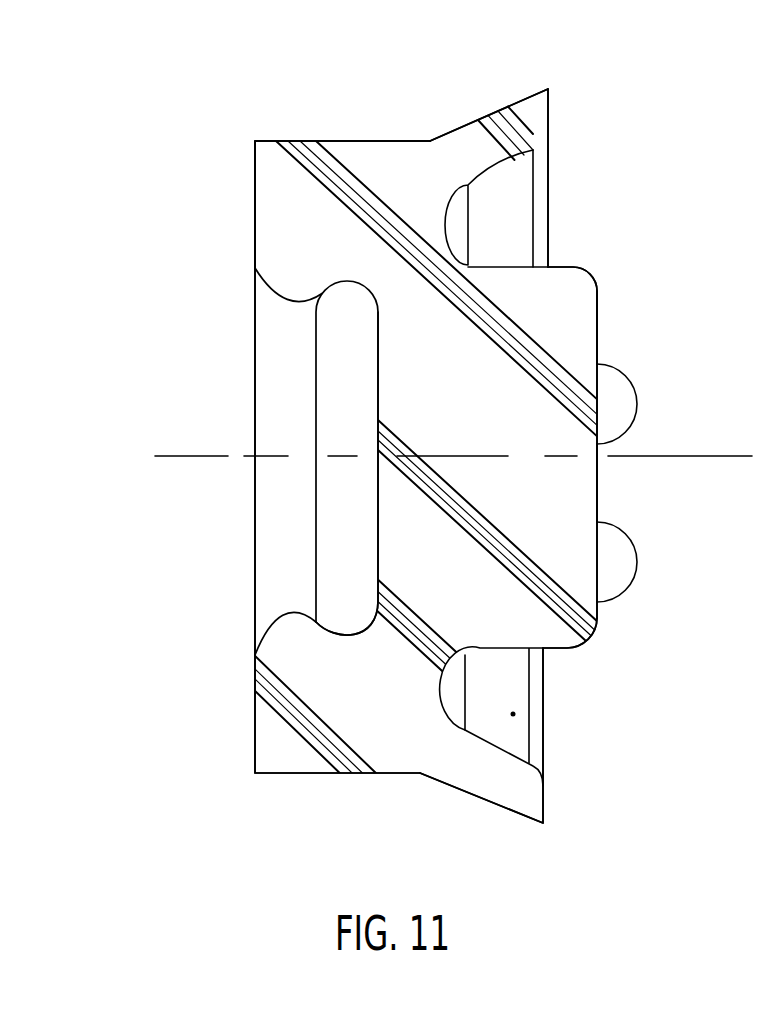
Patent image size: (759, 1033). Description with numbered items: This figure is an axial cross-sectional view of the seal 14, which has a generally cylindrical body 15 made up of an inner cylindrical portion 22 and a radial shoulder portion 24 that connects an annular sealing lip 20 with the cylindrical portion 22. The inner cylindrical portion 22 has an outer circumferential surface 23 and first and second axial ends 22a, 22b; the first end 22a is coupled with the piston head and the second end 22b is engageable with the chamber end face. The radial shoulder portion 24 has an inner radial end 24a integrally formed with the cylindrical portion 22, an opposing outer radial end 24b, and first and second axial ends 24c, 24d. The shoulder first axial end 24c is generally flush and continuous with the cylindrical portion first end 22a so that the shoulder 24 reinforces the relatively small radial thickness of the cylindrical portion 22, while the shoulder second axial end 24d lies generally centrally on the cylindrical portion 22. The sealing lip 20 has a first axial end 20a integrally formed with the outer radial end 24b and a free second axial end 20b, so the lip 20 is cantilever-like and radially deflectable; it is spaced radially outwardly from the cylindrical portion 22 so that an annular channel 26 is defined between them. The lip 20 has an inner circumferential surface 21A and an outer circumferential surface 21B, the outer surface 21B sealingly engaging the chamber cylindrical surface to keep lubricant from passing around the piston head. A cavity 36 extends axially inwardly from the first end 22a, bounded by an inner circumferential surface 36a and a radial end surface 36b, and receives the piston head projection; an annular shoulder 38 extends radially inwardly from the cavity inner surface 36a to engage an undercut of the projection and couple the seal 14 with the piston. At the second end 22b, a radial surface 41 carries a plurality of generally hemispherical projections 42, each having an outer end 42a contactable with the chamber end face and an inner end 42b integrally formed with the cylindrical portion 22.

The seal 14 is at (158, 67).
The cylindrical body 15 is at (188, 728).
The sealing lip 20 is at (490, 92).
The lip first axial end 20a is at (438, 141).
The lip second axial end 20b is at (549, 88).
The inner circumferential surface 21A is at (510, 757).
The outer circumferential surface 21B is at (497, 805).
The inner cylindrical portion 22 is at (578, 252).
The cylindrical portion first axial end 22a is at (260, 267).
The cylindrical portion second axial end 22b is at (598, 302).
The outer circumferential surface 23 is at (566, 649).
The radial shoulder portion 24 is at (240, 195).
The shoulder inner radial end 24a is at (340, 268).
The shoulder outer radial end 24b is at (330, 141).
The shoulder first axial end 24c is at (255, 221).
The shoulder second axial end 24d is at (445, 229).
The annular channel 26 is at (516, 714).
The cavity 36 is at (256, 364).
The cavity inner circumferential surface 36a is at (345, 628).
The cavity radial end surface 36b is at (380, 481).
The annular shoulder 38 is at (283, 620).
The radial surface 41 is at (598, 493).
The projections 42 is at (632, 564).
The projection outer end 42a is at (637, 402).
The projection inner end 42b is at (597, 419).